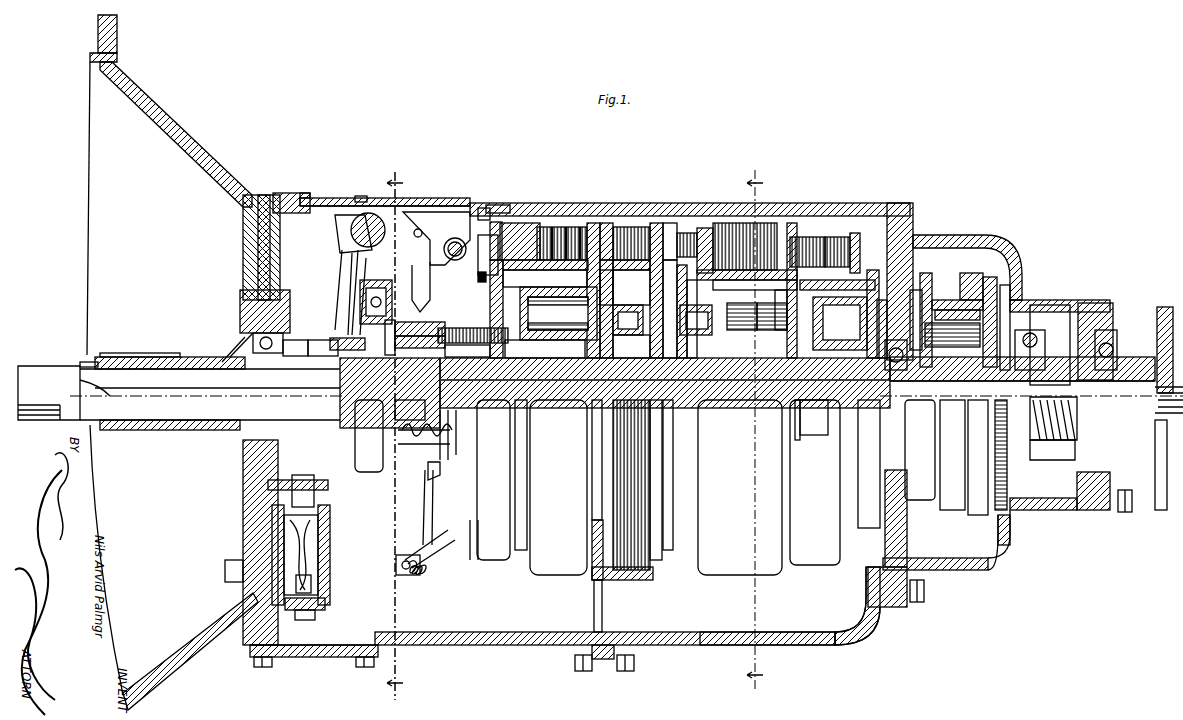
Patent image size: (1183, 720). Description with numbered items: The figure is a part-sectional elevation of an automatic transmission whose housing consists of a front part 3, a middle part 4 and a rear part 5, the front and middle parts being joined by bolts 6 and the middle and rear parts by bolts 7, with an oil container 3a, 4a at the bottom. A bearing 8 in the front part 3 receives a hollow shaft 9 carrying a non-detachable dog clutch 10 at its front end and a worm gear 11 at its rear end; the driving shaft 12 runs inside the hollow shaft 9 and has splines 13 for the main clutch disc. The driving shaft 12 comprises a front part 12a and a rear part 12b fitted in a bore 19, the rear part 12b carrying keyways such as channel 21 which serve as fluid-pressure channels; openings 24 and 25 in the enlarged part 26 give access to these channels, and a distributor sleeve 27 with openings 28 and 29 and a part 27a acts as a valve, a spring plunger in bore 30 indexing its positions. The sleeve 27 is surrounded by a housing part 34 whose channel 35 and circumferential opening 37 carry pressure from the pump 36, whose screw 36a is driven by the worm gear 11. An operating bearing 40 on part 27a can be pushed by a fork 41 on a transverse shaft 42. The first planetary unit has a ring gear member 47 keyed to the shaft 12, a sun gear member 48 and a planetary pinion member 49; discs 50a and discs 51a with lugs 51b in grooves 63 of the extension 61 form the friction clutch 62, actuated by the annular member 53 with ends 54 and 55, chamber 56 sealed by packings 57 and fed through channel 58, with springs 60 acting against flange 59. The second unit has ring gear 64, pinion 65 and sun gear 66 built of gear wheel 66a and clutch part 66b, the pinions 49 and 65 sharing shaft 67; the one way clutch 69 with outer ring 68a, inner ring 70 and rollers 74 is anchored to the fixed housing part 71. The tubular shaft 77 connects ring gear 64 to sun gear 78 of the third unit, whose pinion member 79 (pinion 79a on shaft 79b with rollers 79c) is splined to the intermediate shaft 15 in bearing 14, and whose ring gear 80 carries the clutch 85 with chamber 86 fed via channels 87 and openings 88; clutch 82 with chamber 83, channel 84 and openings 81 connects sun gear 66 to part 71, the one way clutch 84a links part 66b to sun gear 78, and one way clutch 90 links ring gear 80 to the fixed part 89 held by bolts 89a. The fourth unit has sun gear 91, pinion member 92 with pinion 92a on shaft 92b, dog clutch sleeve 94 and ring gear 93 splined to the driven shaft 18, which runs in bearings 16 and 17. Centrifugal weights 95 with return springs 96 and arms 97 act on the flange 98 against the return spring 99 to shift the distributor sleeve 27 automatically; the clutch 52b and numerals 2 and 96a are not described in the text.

The section line 2- 2 is at (374, 431).
The front part of transmission housing 3 is at (258, 252).
The oil container 3a is at (498, 642).
The middle part of transmission housing 4 is at (706, 212).
The oil container 4a is at (713, 646).
The rear part of transmission housing 5 is at (960, 242).
The bolts 6 is at (630, 663).
The bolts 7 is at (922, 590).
The bearing 8 is at (252, 343).
The hollow shaft 9 is at (160, 358).
The non-detachable dog clutch 10 is at (82, 364).
The worm gear 11 is at (297, 347).
The driving shaft 12 is at (130, 370).
The front part of driving shaft 12a is at (560, 410).
The rear part of driving shaft 12b is at (822, 396).
The splines 13 is at (30, 378).
The bearing 14 is at (898, 372).
The intermediate shaft 15 is at (935, 400).
The bearing 16 is at (1030, 340).
The bearing 17 is at (1105, 340).
The driven shaft 18 is at (1065, 412).
The bore 19 is at (735, 396).
The keyway / fluid-pressure channel 21 is at (578, 410).
The opening 24 is at (385, 390).
The opening 25 is at (467, 352).
The enlarged part of driving shaft 26 is at (323, 347).
The distributor sleeve 27 is at (348, 337).
The distributor sleeve member part 27a is at (405, 320).
The openings 28 is at (400, 336).
The openings 29 is at (410, 385).
The bore 30 is at (398, 405).
The housing part 34 is at (335, 340).
The fluid-pressure channel 35 is at (356, 268).
The fluid pump 36 is at (324, 538).
The pump screw 36a is at (312, 552).
The circumferential opening 37 is at (398, 320).
The operating bearing 40 is at (374, 290).
The fork 41 is at (340, 260).
The transverse shaft 42 is at (368, 213).
The ring gear member 47 is at (480, 316).
The sun gear member 48 is at (598, 395).
The planetary pinion member 49 is at (597, 310).
The friction clutch discs 50a is at (552, 226).
The friction clutch discs 51a is at (566, 226).
The lugs 51b is at (620, 226).
The clutch plate 52b is at (540, 226).
The annular clutch actuating member 53 is at (510, 220).
The end of clutch actuating member 54 is at (545, 242).
The end of clutch actuating member 55 is at (495, 222).
The fluid-pressure working chamber 56 is at (480, 280).
The piston ring packings 57 is at (500, 215).
The channel 58 is at (493, 480).
The flange 59 is at (480, 240).
The helical clutch springs 60 is at (478, 210).
The extension 61 is at (555, 226).
The multiple disc friction clutch 62 is at (604, 222).
The longitudinal grooves 63 is at (586, 226).
The ring gear member 64 is at (526, 395).
The planetary pinion member 65 is at (558, 331).
The sun gear member 66 is at (582, 395).
The gear wheel 66a is at (553, 395).
The clutch part 66b is at (668, 395).
The shaft 67 is at (558, 313).
The outer ring 68a is at (660, 222).
The one way clutch 69 is at (610, 430).
The inner ring 70 is at (604, 410).
The fixed housing part 71 is at (640, 226).
The roller 74 is at (628, 320).
The tubular shaft 77 is at (655, 410).
The sun gear member 78 is at (712, 396).
The planetary pinion member 79 is at (778, 398).
The planetary pinion 79a is at (788, 307).
The shaft 79b is at (772, 316).
The cylindrical bearing rollers 79c is at (742, 316).
The ring gear member 80 is at (745, 283).
The openings 81 is at (672, 440).
The multiple disc friction clutch 82 is at (670, 222).
The fluid-pressure working chamber 83 is at (682, 232).
The channel 84 is at (700, 232).
The one way clutch 84a is at (694, 311).
The multiple disc friction clutch 85 is at (770, 226).
The fluid-pressure working chamber 86 is at (812, 250).
The channels 87 is at (830, 250).
The openings 88 is at (798, 398).
The fixed housing part 89 is at (884, 300).
The bolts 89a is at (912, 300).
The one way clutch 90 is at (839, 314).
The sun gear member 91 is at (958, 396).
The planetary pinion member 92 is at (930, 290).
The planetary pinion 92a is at (985, 305).
The shaft 92b is at (952, 335).
The ring gear member 93 is at (1020, 275).
The dog clutch sleeve 94 is at (975, 282).
The centrifugal weights 95 is at (428, 580).
The centrifugal weight return coil springs 96 is at (428, 262).
The pin 96a is at (452, 242).
The distributor sleeve operating arm 97 is at (430, 306).
The flange 98 is at (430, 478).
The distributor sleeve return coil spring 99 is at (448, 455).